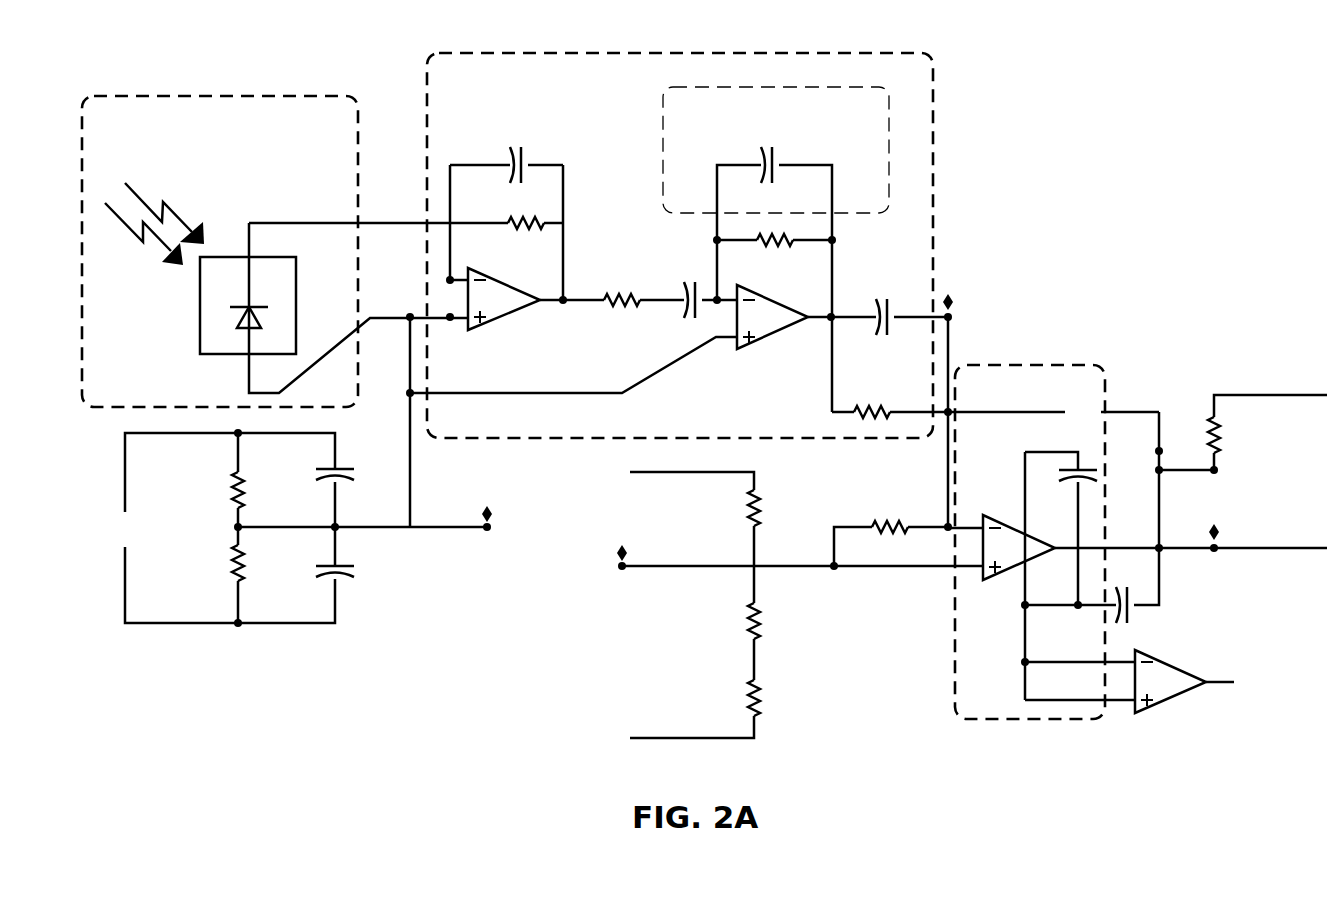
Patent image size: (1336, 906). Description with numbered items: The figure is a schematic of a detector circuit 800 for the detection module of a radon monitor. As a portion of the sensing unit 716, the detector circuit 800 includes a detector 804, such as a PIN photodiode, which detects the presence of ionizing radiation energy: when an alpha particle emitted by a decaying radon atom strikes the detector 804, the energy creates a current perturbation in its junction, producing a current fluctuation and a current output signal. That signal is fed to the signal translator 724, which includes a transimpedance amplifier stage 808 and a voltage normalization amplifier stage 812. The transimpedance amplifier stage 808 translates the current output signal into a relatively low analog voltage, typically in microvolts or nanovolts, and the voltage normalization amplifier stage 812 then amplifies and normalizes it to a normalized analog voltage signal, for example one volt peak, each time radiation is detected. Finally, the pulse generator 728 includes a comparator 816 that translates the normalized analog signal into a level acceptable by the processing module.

The detector circuit 800 is at (1164, 113).
The sensing unit 716 is at (247, 96).
The detector 804 is at (200, 306).
The signal translator 724 is at (933, 126).
The transimpedance amplifier stage 808 is at (497, 325).
The voltage normalization amplifier stage 812 is at (760, 338).
The pulse generator 728 is at (1018, 365).
The comparator 816 is at (990, 578).